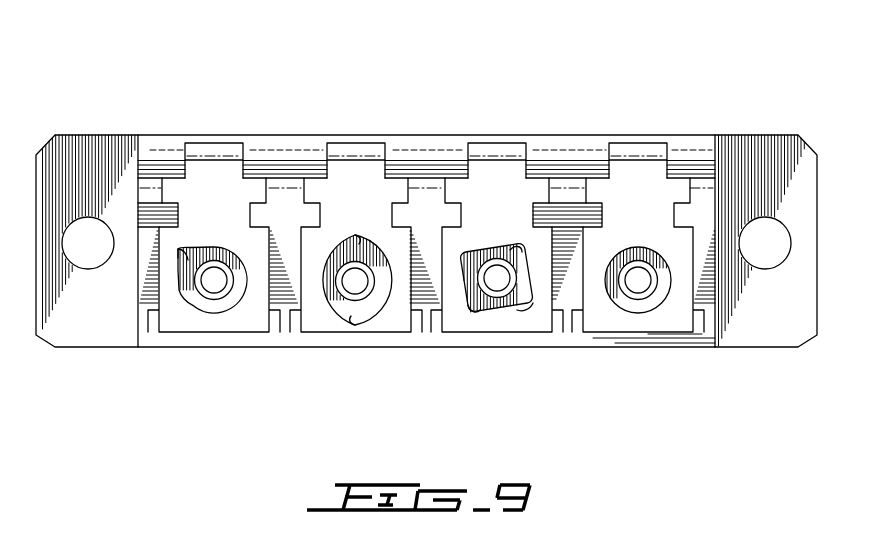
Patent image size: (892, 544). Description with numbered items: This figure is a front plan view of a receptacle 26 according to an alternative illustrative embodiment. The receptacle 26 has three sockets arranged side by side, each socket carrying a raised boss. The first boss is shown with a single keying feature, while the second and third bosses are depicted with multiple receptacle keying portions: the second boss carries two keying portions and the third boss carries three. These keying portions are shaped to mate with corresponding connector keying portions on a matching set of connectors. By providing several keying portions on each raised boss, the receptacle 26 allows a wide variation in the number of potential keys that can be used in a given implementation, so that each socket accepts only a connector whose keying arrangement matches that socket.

The receptacle 26 is at (353, 96).